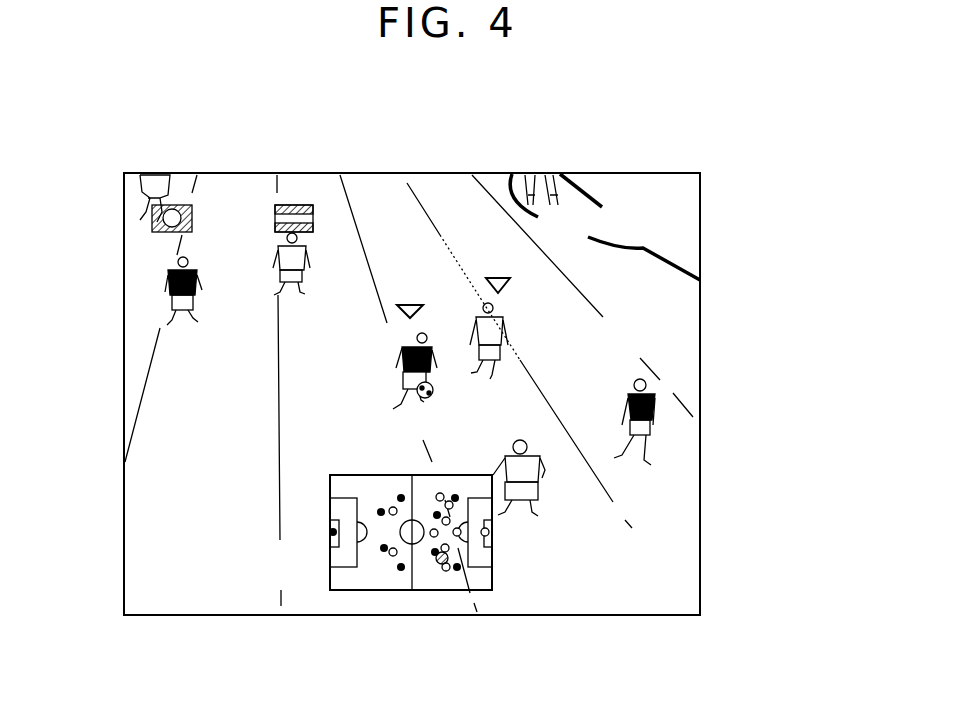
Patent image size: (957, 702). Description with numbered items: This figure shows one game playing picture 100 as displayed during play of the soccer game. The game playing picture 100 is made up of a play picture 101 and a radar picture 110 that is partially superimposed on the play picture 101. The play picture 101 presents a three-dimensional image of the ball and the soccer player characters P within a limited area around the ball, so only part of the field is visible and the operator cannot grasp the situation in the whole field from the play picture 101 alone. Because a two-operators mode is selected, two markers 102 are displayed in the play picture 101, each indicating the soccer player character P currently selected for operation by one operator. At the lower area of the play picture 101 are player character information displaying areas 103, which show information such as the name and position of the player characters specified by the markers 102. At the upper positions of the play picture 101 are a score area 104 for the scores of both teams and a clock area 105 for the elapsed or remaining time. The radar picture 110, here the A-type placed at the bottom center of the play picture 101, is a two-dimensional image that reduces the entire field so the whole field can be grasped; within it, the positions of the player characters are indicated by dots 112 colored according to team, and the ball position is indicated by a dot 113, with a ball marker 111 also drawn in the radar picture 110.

The game playing picture 100 is at (776, 87).
The play picture 101 is at (730, 216).
The marker 102 is at (407, 280).
The player character information displaying area 103 is at (165, 566).
The score area 104 is at (237, 198).
The clock area 105 is at (630, 202).
The radar picture 110 is at (373, 593).
The ball marker 111 is at (442, 564).
The dot 112 is at (401, 571).
The dot 113 is at (457, 571).
The soccer player character P is at (398, 352).